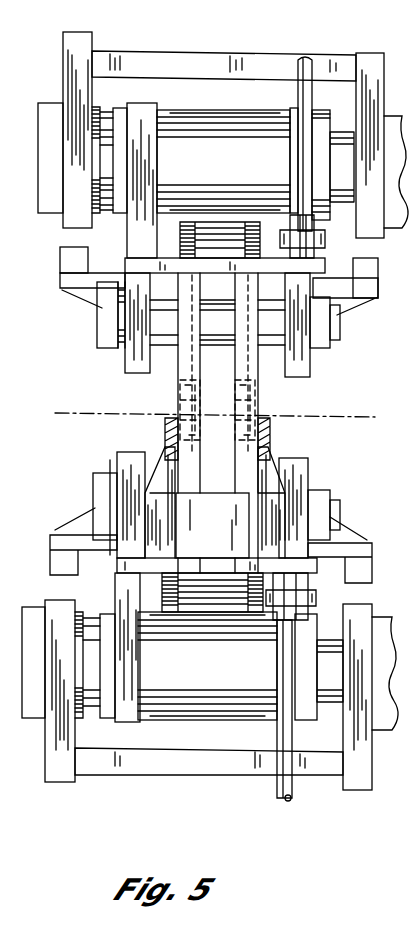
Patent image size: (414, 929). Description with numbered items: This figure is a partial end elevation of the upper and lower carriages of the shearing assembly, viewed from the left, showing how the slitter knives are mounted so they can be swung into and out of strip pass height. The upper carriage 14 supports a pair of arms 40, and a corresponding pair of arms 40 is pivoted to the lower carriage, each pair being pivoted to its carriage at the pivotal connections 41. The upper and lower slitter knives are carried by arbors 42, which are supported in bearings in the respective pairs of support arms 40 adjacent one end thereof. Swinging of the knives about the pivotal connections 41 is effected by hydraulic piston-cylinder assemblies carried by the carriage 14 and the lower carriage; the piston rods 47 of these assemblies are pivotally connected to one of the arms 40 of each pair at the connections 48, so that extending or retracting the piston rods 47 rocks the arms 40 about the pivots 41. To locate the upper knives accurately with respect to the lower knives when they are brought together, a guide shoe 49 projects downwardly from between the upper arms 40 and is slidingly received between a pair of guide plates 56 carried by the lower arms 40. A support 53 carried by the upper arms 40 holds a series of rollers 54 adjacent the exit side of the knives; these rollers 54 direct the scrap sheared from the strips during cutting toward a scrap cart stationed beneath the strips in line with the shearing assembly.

The carriage 14 is at (60, 38).
The arms 40 is at (148, 140).
The pivotal connections 41 is at (177, 110).
The arbors 42 is at (273, 345).
The piston rods 47 is at (298, 92).
The pivotal connection of piston rod to arm 48 is at (288, 215).
The guide shoe 49 is at (222, 428).
The support 53 is at (172, 417).
The rollers 54 is at (178, 385).
The guide plates 56 is at (235, 478).